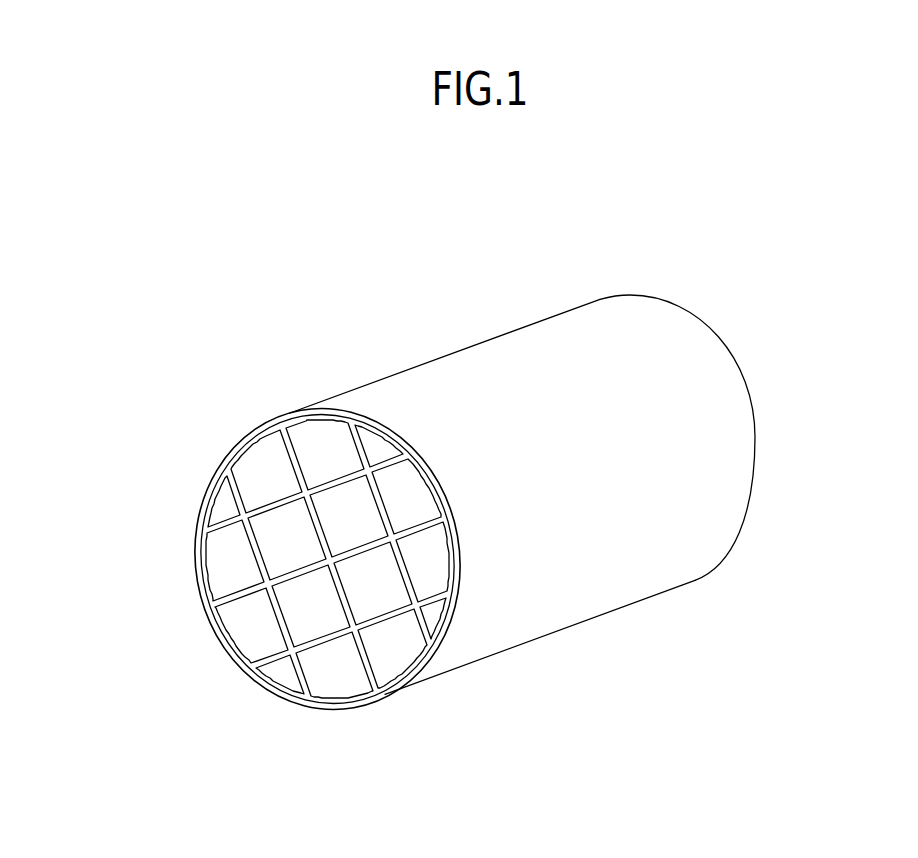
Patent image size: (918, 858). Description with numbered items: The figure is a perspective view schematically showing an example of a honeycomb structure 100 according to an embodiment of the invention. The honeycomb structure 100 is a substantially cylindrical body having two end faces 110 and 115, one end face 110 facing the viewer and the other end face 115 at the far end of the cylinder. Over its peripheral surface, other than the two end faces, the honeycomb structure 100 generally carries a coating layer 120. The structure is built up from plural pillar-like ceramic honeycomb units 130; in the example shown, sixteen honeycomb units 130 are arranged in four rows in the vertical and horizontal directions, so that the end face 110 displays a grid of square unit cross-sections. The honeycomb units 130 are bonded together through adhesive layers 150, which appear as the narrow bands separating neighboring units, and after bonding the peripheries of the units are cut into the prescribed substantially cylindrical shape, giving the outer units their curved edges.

The honeycomb structure 100 is at (202, 262).
The end face 110 is at (153, 544).
The end face 115 is at (750, 337).
The coating layer 120 is at (416, 396).
The honeycomb unit 130 is at (224, 506).
The adhesive layer 150 is at (429, 621).